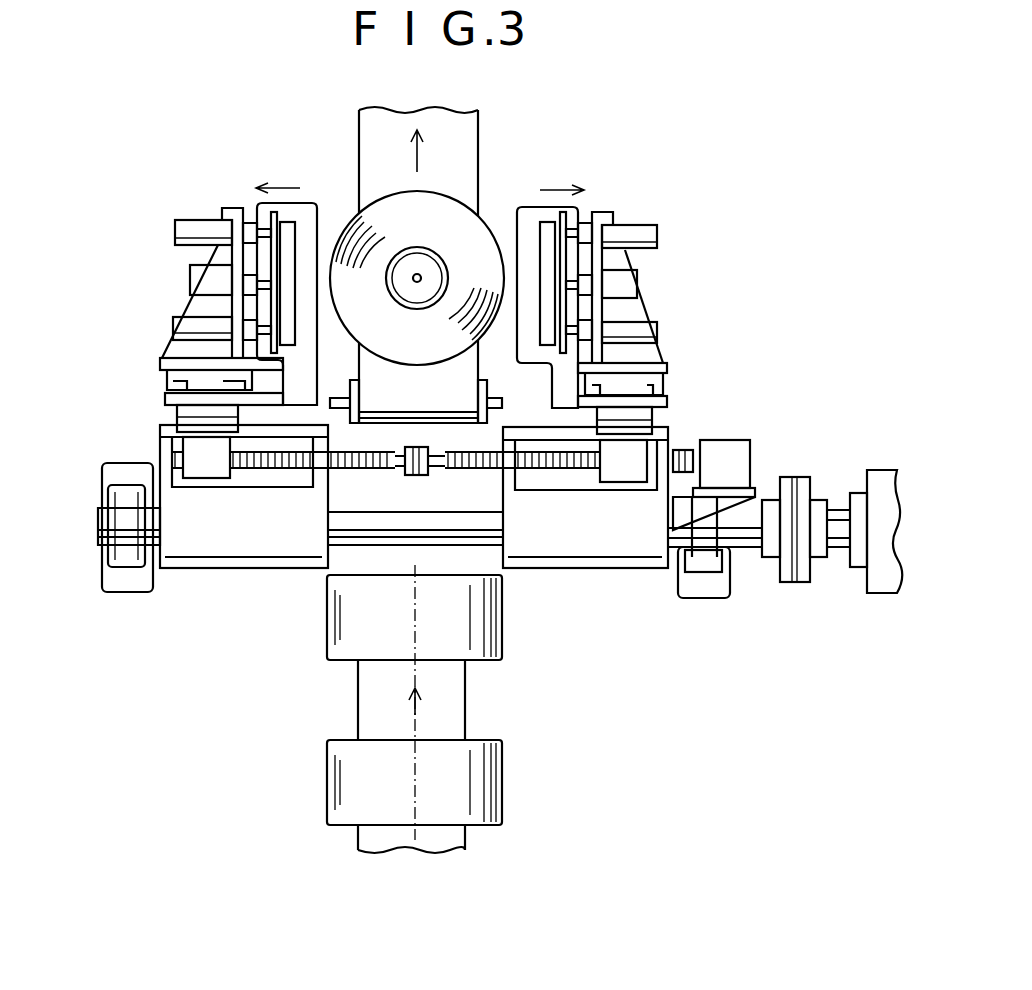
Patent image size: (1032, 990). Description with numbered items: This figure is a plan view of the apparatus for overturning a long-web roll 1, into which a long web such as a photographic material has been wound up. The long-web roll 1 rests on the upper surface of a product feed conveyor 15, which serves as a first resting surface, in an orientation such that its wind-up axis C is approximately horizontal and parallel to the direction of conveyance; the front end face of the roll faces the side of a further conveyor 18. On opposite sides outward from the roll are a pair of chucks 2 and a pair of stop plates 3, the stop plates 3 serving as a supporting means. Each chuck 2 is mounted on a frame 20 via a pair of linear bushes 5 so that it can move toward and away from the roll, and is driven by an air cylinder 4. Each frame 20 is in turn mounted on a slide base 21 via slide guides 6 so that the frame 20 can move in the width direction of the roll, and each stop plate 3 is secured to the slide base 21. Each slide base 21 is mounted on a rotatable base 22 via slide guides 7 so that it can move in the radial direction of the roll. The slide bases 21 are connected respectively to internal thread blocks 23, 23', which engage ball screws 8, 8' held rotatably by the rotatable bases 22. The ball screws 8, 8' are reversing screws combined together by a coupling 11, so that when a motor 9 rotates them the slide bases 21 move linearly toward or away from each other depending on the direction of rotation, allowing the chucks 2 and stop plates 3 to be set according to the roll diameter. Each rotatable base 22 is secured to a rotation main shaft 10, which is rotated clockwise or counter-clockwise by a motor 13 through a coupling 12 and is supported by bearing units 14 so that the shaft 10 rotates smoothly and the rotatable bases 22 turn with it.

The long-web roll 1 is at (492, 226).
The chuck 2 is at (295, 218).
The stop plate 3 is at (258, 206).
The air cylinder 4 is at (190, 280).
The linear bush 5 is at (182, 231).
The slide guide 6 is at (166, 378).
The slide guide 7 is at (185, 426).
The ball screw 8 is at (288, 478).
The ball screw 8' is at (514, 478).
The motor 9 is at (733, 440).
The rotation main shaft 10 is at (100, 526).
The coupling 11 is at (412, 475).
The coupling 12 is at (780, 582).
The motor 13 is at (882, 593).
The bearing unit 14 is at (148, 594).
The product feed conveyor 15 is at (465, 697).
The conveyor 18 is at (478, 160).
The frame 20 is at (192, 308).
The slide base 21 is at (168, 399).
The rotatable base 22 is at (205, 548).
The internal thread block 23 is at (212, 487).
The internal thread block 23' is at (608, 488).
The wind-up axis C is at (417, 276).